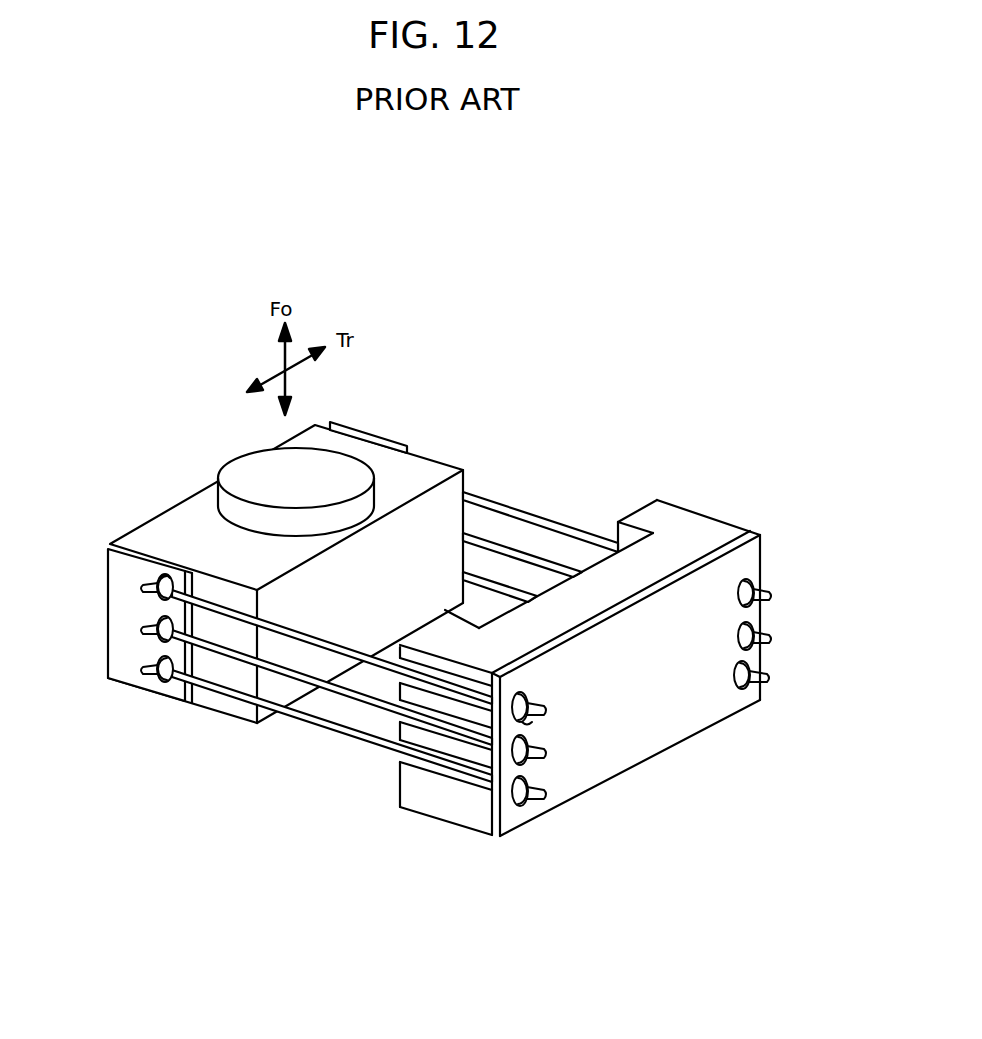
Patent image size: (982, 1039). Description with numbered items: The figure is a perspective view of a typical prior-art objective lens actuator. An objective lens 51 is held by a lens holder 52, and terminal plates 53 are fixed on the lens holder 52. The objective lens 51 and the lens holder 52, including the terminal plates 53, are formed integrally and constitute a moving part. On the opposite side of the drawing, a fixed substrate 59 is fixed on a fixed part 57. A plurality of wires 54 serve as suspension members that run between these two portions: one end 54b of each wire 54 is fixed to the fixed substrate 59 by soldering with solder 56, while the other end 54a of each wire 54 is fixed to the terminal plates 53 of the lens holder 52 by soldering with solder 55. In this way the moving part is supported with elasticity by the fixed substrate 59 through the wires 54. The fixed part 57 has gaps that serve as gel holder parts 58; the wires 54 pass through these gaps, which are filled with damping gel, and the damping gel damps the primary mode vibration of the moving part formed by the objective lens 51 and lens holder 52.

The objective lens 51 is at (240, 470).
The lens holder 52 is at (440, 462).
The terminal plates 53 is at (118, 611).
The wires 54 is at (488, 585).
The other end of wire 54a is at (150, 584).
The one end of wire 54b is at (768, 595).
The solder 55 is at (165, 580).
The solder 56 is at (527, 723).
The fixed part 57 is at (703, 513).
The gel holder parts 58 is at (437, 693).
The fixed substrate 59 is at (672, 728).